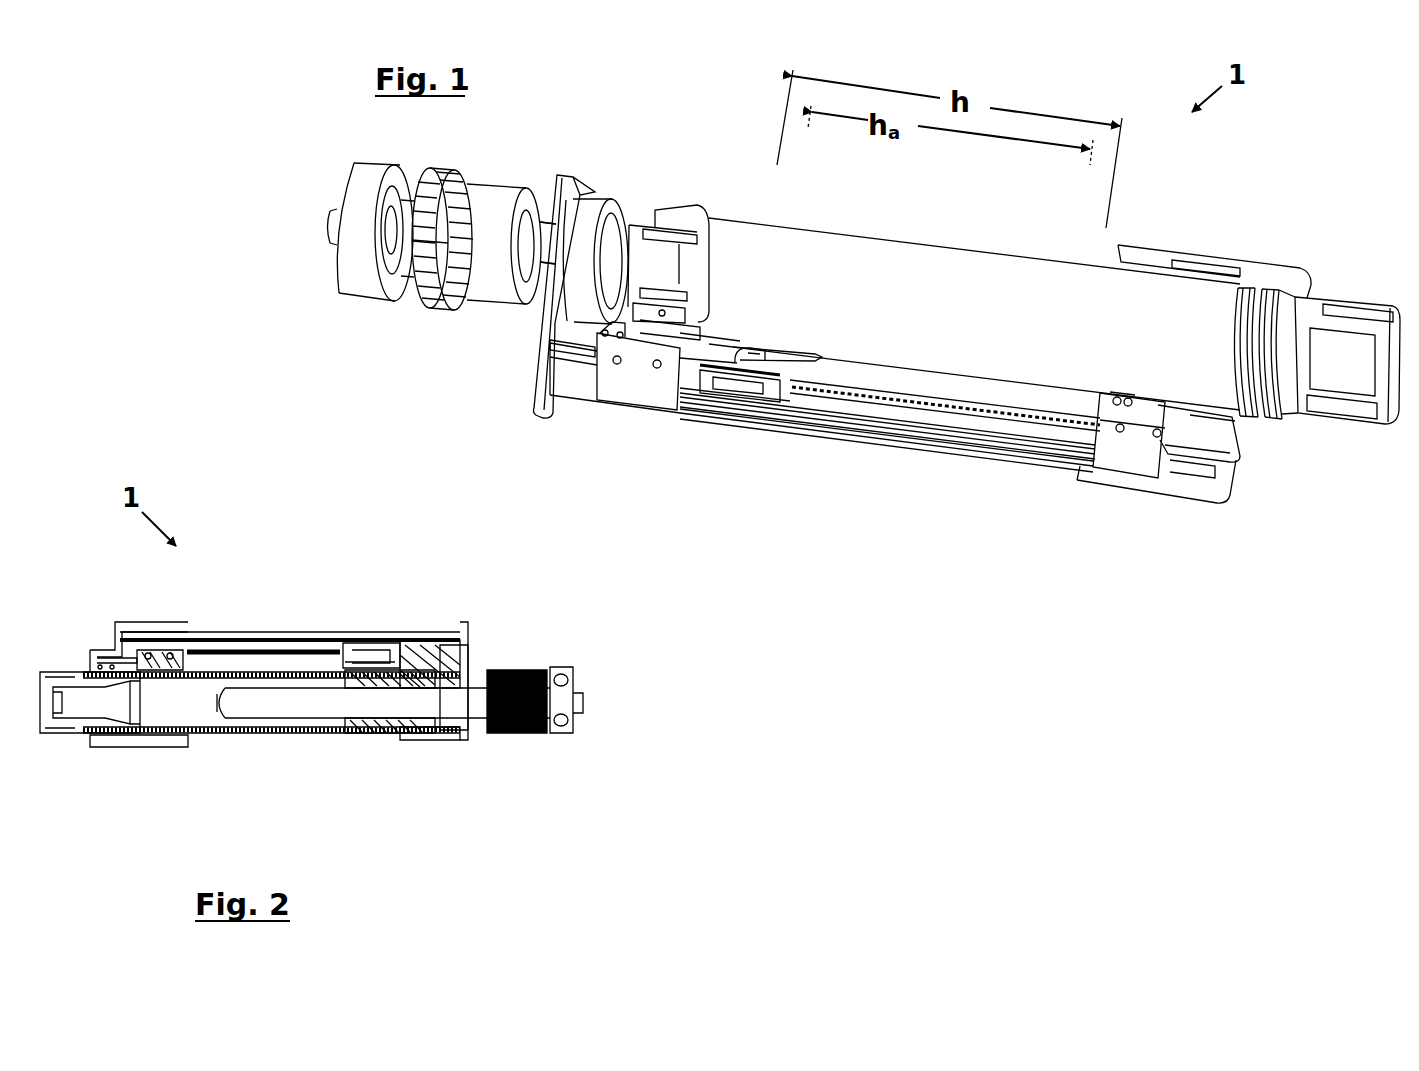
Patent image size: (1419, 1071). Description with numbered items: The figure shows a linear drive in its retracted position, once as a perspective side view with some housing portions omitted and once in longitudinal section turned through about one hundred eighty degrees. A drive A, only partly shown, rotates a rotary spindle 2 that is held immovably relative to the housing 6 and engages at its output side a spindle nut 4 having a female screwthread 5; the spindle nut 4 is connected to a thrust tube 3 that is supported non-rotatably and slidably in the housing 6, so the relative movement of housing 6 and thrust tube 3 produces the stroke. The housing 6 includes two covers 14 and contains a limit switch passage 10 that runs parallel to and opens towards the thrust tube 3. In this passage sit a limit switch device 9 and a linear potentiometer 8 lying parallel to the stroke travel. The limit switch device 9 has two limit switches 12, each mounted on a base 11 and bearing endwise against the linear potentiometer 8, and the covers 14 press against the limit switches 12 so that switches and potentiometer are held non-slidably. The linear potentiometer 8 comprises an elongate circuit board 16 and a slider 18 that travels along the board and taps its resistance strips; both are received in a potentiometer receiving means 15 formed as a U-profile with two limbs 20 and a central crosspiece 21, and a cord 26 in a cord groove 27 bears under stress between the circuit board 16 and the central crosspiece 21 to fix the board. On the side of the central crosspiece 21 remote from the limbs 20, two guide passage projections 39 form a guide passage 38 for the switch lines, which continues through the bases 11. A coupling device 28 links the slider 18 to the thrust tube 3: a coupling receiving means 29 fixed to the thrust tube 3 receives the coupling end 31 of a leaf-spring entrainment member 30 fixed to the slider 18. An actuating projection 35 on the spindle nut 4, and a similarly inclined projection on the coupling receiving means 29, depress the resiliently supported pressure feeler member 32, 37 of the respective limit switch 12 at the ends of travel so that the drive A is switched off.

In FIG. 1, the rotary spindle 2 is at (540, 254).
In FIG. 2, the rotary spindle 2 is at (285, 706).
In FIG. 1, the thrust tube 3 is at (974, 314).
In FIG. 2, the thrust tube 3 is at (318, 735).
In FIG. 1, the spindle nut 4 is at (658, 206).
In FIG. 2, the spindle nut 4 is at (390, 731).
In FIG. 2, the female screwthread 5 is at (413, 716).
In FIG. 1, the housing 6 is at (1250, 257).
In FIG. 2, the housing 6 is at (122, 742).
In FIG. 1, the linear potentiometer 8 is at (778, 416).
In FIG. 1, the limit switch device 9 is at (1118, 504).
In FIG. 2, the limit switch device 9 is at (454, 687).
In FIG. 1, the limit switch passage 10 is at (1212, 474).
In FIG. 1, the base 11 is at (1145, 462).
In FIG. 1, the limit switch 12 is at (1138, 421).
In FIG. 2, the limit switch 12 is at (160, 660).
In FIG. 1, the cover 14 is at (540, 320).
In FIG. 2, the cover 14 is at (156, 740).
In FIG. 1, the potentiometer receiving means 15 is at (851, 441).
In FIG. 2, the potentiometer receiving means 15 is at (280, 632).
In FIG. 1, the circuit board 16 is at (852, 404).
In FIG. 1, the slider 18 is at (710, 385).
In FIG. 2, the slider 18 is at (371, 655).
In FIG. 1, the limb 20 is at (956, 390).
In FIG. 1, the central crosspiece 21 is at (956, 431).
In FIG. 1, the cord 26 is at (889, 413).
In FIG. 1, the cord groove 27 is at (887, 433).
In FIG. 1, the coupling device 28 is at (784, 320).
In FIG. 1, the coupling receiving means 29 is at (726, 328).
In FIG. 1, the entrainment member 30 is at (737, 350).
In FIG. 1, the coupling end 31 is at (767, 351).
In FIG. 1, the pressure feeler member 32 is at (753, 349).
In FIG. 1, the actuating projection 35 is at (660, 330).
In FIG. 1, the pressure feeler member 37 is at (641, 318).
In FIG. 1, the guide passage 38 is at (713, 413).
In FIG. 1, the guide passage projection 39 is at (886, 435).
In FIG. 1, the drive A is at (420, 281).
In FIG. 2, the drive A is at (540, 736).